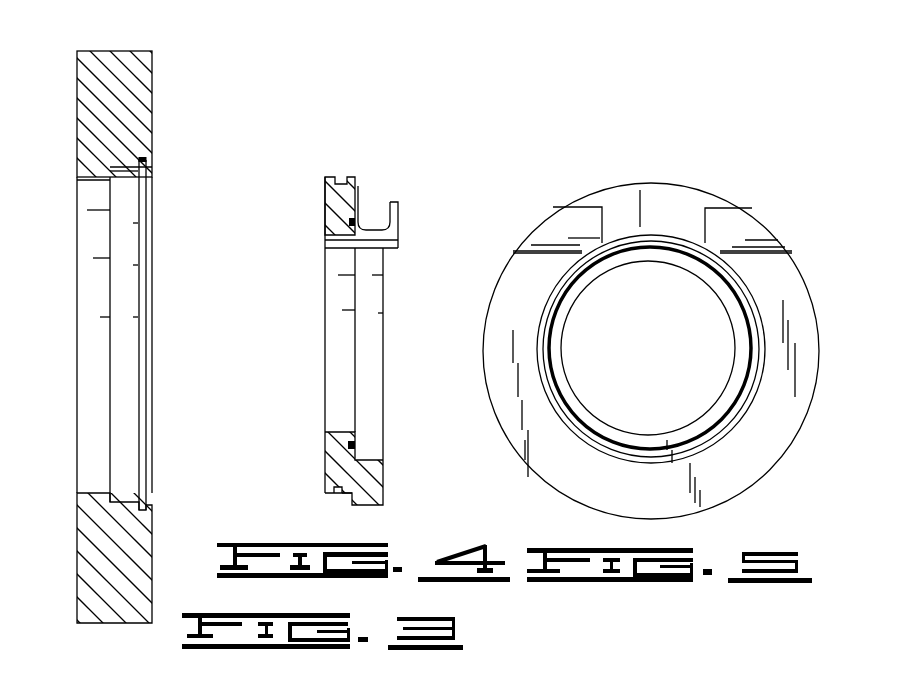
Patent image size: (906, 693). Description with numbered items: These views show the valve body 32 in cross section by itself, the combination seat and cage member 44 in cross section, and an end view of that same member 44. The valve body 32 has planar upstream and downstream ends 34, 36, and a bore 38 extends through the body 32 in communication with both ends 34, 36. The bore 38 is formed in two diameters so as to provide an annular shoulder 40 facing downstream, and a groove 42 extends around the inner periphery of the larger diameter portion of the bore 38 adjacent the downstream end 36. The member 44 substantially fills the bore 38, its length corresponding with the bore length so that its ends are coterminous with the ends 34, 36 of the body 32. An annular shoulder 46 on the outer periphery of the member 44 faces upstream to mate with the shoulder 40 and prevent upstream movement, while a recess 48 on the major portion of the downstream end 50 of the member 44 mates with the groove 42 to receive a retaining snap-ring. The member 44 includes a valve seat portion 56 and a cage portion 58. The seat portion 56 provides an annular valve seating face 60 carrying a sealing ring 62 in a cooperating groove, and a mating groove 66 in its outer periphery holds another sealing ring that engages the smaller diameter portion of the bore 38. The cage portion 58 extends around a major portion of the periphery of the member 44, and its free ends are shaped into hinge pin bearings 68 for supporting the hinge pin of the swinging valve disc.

In FIG. 3, the valve body 32 is at (118, 67).
In FIG. 3, the upstream end 34 is at (77, 86).
In FIG. 3, the downstream end 36 is at (153, 93).
In FIG. 3, the bore 38 is at (128, 178).
In FIG. 3, the annular shoulder 40 is at (110, 497).
In FIG. 3, the groove 42 is at (143, 253).
In FIG. 4, the combination seat and cage member 44 is at (322, 194).
In FIG. 5, the combination seat and cage member 44 is at (666, 181).
In FIG. 4, the annular shoulder 46 is at (355, 500).
In FIG. 4, the recess 48 is at (385, 290).
In FIG. 4, the downstream end 50 is at (392, 226).
In FIG. 4, the valve seat portion 56 is at (330, 220).
In FIG. 4, the cage portion 58 is at (373, 492).
In FIG. 5, the cage portion 58 is at (496, 346).
In FIG. 4, the annular valve seating face 60 is at (357, 437).
In FIG. 4, the sealing ring 62 is at (357, 446).
In FIG. 5, the sealing ring 62 is at (545, 349).
In FIG. 4, the mating groove 66 is at (335, 493).
In FIG. 4, the hinge pin bearings 68 is at (372, 226).